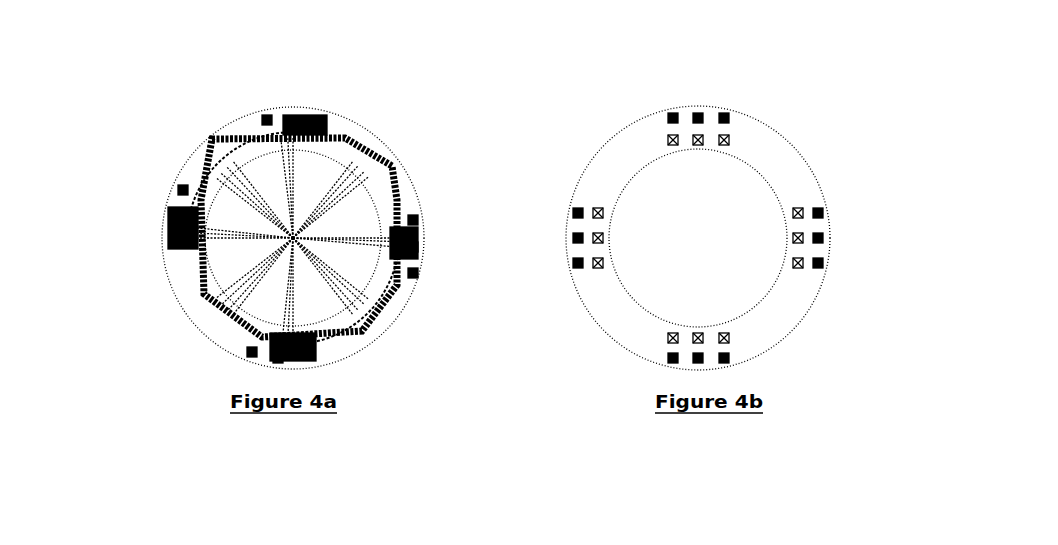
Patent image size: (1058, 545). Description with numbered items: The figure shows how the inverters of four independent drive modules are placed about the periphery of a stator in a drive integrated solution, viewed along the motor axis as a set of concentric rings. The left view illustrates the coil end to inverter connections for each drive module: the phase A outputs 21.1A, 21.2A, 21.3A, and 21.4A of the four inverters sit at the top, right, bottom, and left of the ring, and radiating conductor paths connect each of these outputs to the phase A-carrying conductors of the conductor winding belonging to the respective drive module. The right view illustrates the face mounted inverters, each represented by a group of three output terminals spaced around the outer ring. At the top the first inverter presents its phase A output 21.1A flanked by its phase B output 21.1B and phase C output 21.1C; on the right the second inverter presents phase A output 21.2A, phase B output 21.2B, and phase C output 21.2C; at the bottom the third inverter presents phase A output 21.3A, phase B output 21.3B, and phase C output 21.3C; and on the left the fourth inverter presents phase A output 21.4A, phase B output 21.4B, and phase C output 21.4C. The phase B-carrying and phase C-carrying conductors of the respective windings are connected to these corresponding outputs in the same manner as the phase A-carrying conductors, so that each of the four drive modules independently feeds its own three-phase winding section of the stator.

In FIG. 4A, the phase A output 21.1A is at (293, 117).
In FIG. 4B, the phase A output 21.1A is at (698, 118).
In FIG. 4B, the phase B output 21.1B is at (725, 118).
In FIG. 4B, the phase C output 21.1C is at (672, 118).
In FIG. 4A, the phase A output 21.2A is at (413, 247).
In FIG. 4B, the phase A output 21.2A is at (820, 238).
In FIG. 4B, the phase B output 21.2B is at (820, 263).
In FIG. 4B, the phase C output 21.2C is at (819, 213).
In FIG. 4A, the phase A output 21.3A is at (280, 362).
In FIG. 4B, the phase A output 21.3A is at (700, 358).
In FIG. 4B, the phase B output 21.3B is at (726, 358).
In FIG. 4B, the phase C output 21.3C is at (673, 357).
In FIG. 4A, the phase A output 21.4A is at (177, 213).
In FIG. 4B, the phase A output 21.4A is at (578, 238).
In FIG. 4B, the phase B output 21.4B is at (578, 213).
In FIG. 4B, the phase C output 21.4C is at (580, 263).